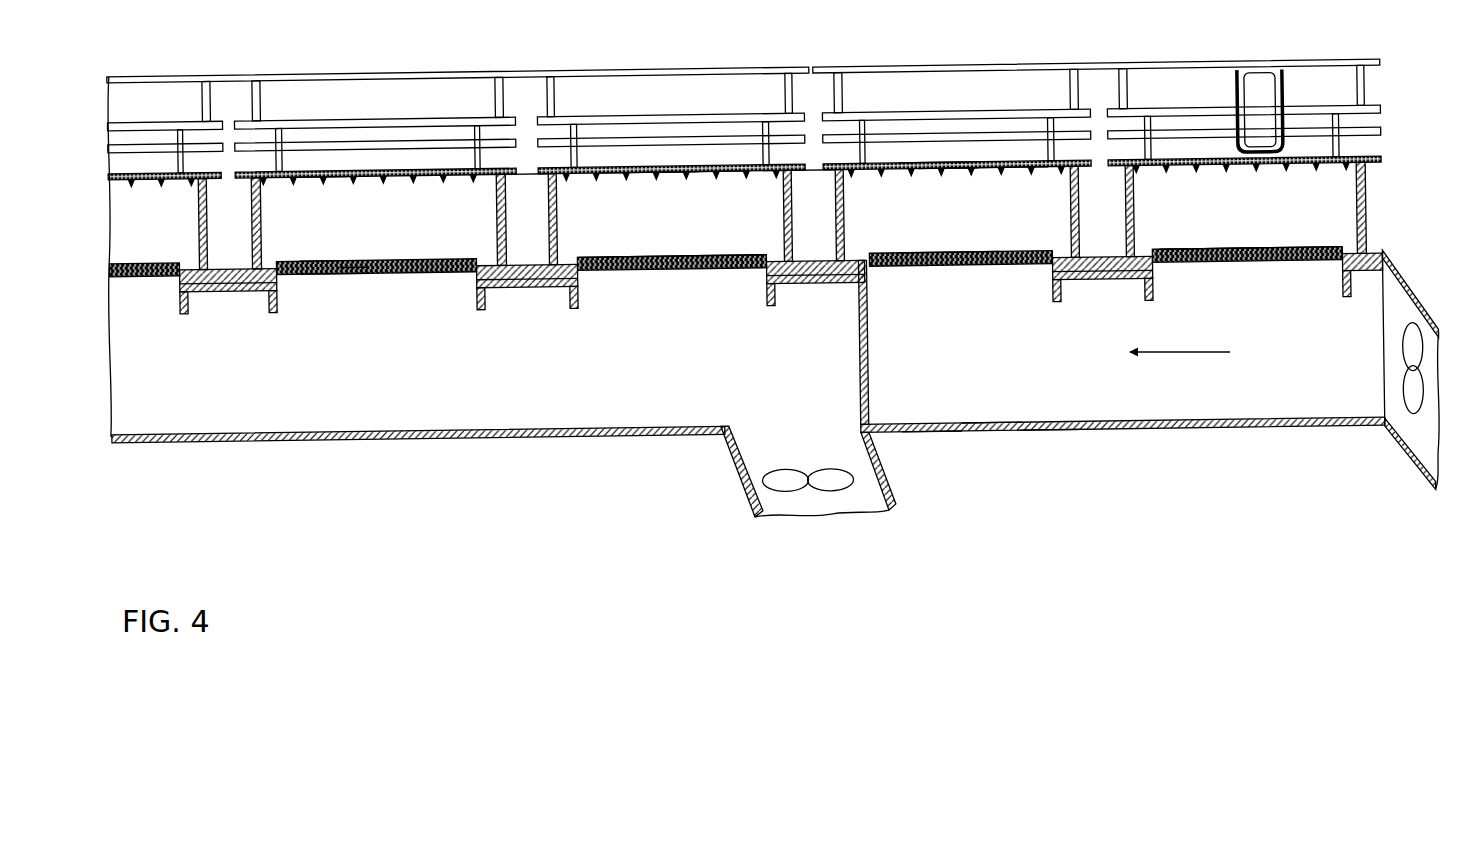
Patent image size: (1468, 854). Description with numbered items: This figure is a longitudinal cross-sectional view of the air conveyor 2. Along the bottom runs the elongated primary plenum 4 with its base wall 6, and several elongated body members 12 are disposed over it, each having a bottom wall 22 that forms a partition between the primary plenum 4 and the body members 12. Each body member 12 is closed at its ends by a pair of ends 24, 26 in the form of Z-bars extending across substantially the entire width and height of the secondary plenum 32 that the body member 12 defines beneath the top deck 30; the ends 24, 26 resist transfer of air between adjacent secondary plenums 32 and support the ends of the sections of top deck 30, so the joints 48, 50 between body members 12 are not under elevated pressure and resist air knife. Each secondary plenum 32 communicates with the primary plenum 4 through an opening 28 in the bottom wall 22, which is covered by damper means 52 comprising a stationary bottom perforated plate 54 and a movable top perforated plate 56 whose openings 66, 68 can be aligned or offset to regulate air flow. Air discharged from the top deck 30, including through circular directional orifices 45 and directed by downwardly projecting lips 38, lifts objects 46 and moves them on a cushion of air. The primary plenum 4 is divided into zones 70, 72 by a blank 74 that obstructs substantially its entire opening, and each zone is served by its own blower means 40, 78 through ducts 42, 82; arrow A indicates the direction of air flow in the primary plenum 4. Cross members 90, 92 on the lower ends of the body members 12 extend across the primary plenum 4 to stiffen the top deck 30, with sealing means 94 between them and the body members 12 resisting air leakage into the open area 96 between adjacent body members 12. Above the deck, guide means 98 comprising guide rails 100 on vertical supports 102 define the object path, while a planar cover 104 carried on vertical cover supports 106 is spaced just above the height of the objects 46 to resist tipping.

The air conveyor 2 is at (1050, 440).
The primary plenum 4 is at (990, 405).
The base wall 6 is at (934, 430).
The body member 12 is at (694, 195).
The bottom wall 22 is at (694, 275).
The end 24 is at (505, 227).
The end 26 is at (560, 232).
The opening 28 is at (988, 267).
The top deck 30 is at (385, 165).
The secondary plenum 32 is at (645, 187).
The lip 38 is at (317, 180).
The blower means 40 is at (1396, 432).
The duct 42 is at (1432, 486).
The directional orifice 45 is at (937, 167).
The object 46 is at (1283, 72).
The joint 48 is at (527, 172).
The joint 50 is at (817, 170).
The damper means 52 is at (620, 249).
The bottom perforated plate 54 is at (325, 262).
The top perforated plate 56 is at (327, 260).
The openings 66 is at (348, 272).
The openings 68 is at (350, 272).
The zone 70 is at (1192, 403).
The zone 72 is at (337, 411).
The blank 74 is at (870, 388).
The zone blower means 78 is at (788, 485).
The duct 82 is at (743, 488).
The cross member 90 is at (543, 290).
The cross member 92 is at (503, 291).
The sealing means 94 is at (182, 278).
The open area 96 is at (222, 226).
The guide means 98 is at (293, 113).
The guide rail 100 is at (492, 112).
The vertical support 102 is at (178, 137).
The cover 104 is at (700, 69).
The vertical cover support 106 is at (507, 92).
The arrow A is at (1196, 360).